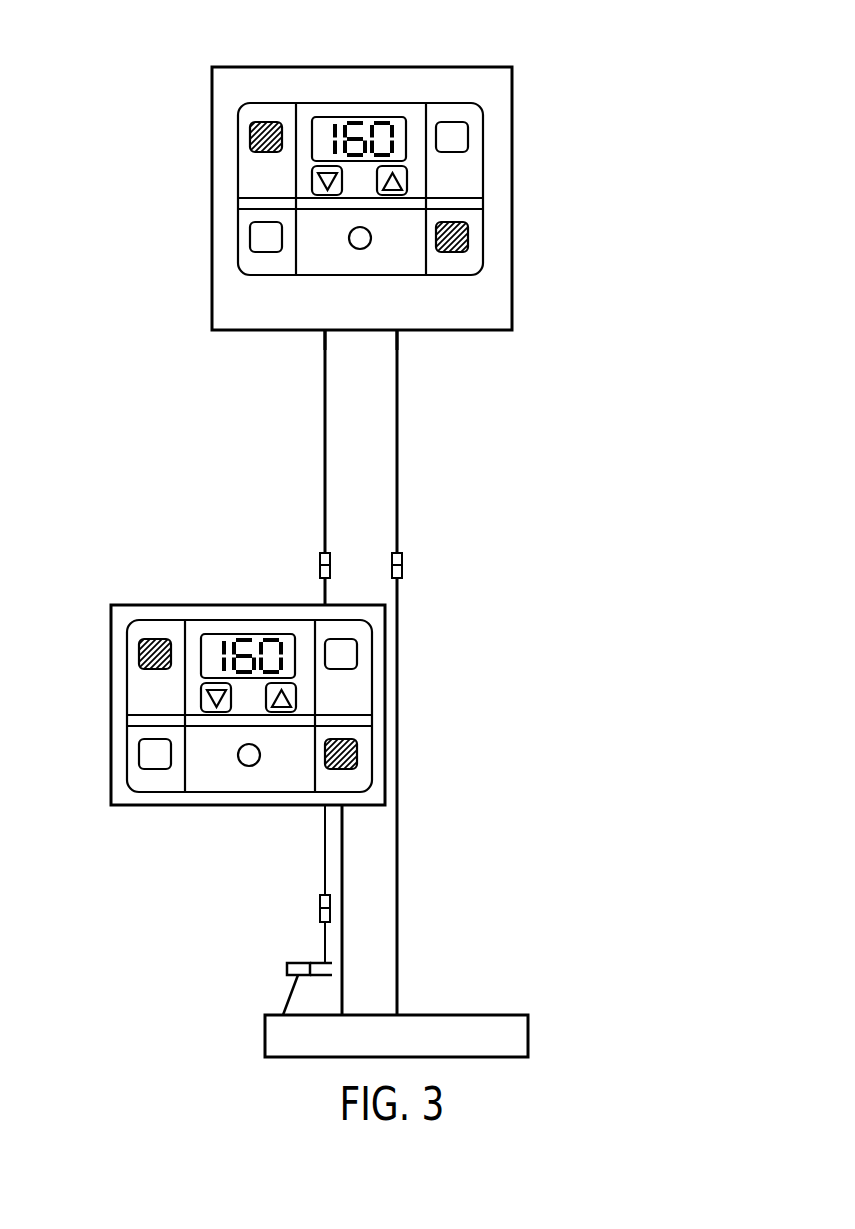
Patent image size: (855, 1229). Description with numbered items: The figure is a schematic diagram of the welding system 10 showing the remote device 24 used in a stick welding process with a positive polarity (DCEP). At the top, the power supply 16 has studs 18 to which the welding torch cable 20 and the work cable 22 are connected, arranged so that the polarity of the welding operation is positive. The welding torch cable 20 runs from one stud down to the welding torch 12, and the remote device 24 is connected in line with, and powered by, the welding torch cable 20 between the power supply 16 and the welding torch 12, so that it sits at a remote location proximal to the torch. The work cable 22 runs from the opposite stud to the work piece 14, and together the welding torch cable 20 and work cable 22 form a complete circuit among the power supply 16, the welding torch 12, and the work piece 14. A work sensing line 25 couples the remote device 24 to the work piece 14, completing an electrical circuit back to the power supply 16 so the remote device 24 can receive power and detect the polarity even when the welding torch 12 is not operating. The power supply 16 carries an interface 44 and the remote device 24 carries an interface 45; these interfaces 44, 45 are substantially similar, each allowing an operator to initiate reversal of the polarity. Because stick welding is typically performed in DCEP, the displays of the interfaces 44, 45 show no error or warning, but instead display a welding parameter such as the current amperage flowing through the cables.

The welding system 10 is at (170, 58).
The welding torch 12 is at (287, 968).
The work piece 14 is at (453, 1015).
The power supply 16 is at (452, 67).
The studs 18 is at (314, 340).
The welding torch cable 20 is at (325, 452).
The work cable 22 is at (397, 452).
The remote device 24 is at (111, 700).
The work sensing line 25 is at (342, 900).
The interface 44 is at (270, 103).
The interface 45 is at (142, 620).